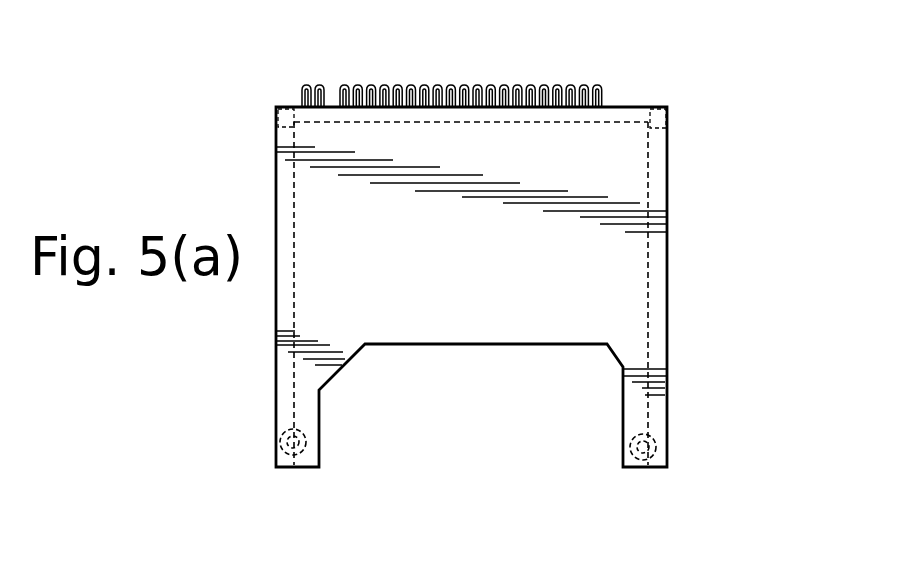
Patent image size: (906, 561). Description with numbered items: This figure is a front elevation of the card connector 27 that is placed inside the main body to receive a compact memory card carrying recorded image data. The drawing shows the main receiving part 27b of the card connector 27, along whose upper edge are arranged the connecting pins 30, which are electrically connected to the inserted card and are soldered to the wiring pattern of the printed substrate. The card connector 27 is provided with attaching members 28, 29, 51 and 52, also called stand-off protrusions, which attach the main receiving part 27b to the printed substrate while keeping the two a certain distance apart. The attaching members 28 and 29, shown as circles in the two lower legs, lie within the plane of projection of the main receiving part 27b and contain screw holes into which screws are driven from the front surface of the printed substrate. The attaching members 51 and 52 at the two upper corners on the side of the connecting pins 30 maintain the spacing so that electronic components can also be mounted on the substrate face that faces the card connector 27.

The card connector 27 is at (672, 112).
The main receiving part 27b is at (627, 244).
The attaching member 28 is at (320, 445).
The attaching member 29 is at (627, 446).
The connecting pins 30 is at (577, 84).
The attaching member 51 is at (275, 117).
The attaching member 52 is at (667, 110).